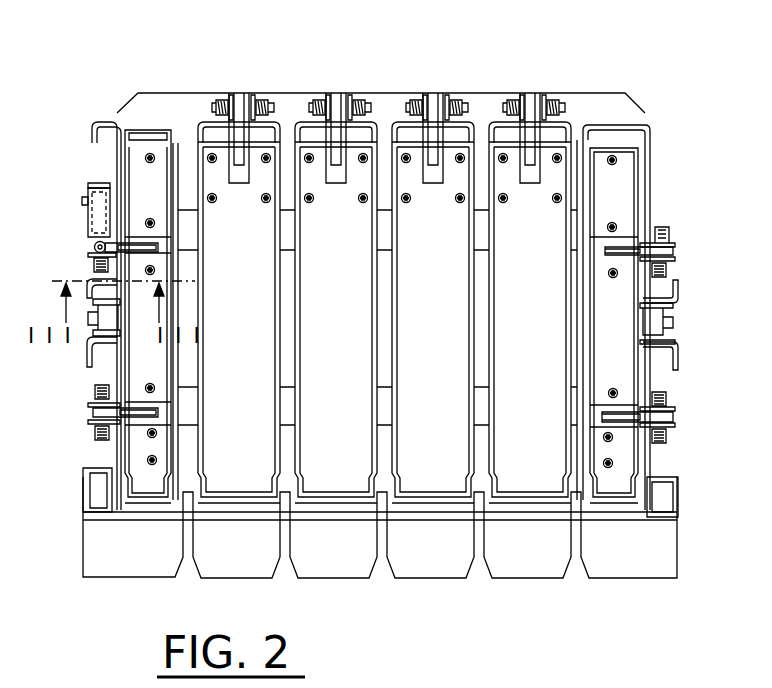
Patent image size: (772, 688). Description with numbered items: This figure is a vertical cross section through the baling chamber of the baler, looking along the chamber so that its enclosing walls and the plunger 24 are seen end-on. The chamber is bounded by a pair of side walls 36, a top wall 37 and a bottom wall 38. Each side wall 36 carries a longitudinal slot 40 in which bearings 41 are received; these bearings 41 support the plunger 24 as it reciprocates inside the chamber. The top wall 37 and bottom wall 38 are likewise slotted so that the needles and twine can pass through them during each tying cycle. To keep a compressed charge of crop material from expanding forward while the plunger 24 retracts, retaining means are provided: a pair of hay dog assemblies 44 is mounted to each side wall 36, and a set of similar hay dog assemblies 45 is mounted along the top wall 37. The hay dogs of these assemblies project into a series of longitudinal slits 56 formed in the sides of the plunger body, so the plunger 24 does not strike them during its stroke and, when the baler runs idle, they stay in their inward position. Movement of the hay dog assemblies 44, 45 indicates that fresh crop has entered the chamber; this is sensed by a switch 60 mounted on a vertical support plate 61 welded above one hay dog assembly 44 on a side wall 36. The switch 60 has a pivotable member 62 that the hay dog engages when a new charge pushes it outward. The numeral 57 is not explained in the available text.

The plunger 24 is at (352, 357).
The side wall 36 is at (110, 165).
The top wall 37 is at (470, 117).
The bottom wall 38 is at (442, 515).
The longitudinal slot 40 is at (86, 336).
The bearing 41 is at (668, 304).
The hay dog assembly 44 is at (80, 413).
The hay dog assembly 45 is at (238, 70).
The longitudinal slit 56 is at (143, 427).
The hanger 57 is at (238, 184).
The switch 60 is at (95, 208).
The vertical support plate 61 is at (100, 181).
The pivotable member 62 is at (96, 248).